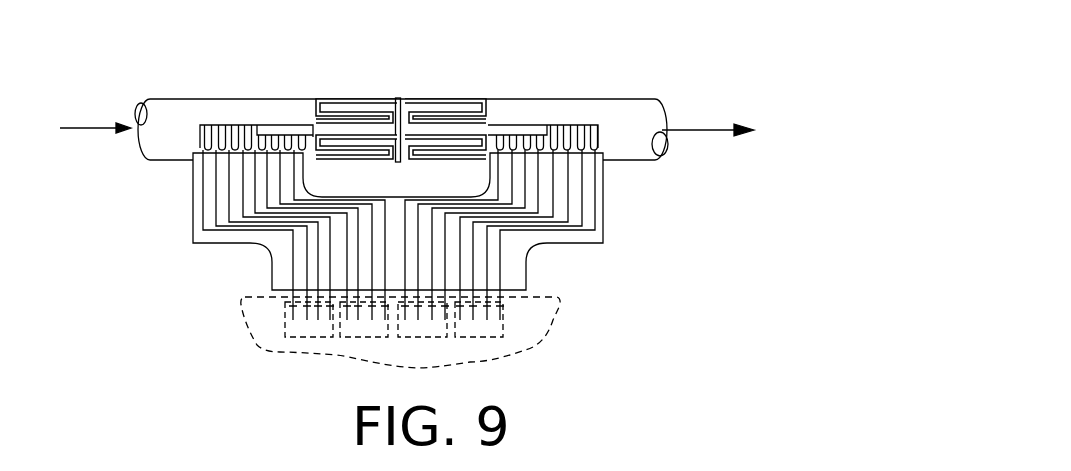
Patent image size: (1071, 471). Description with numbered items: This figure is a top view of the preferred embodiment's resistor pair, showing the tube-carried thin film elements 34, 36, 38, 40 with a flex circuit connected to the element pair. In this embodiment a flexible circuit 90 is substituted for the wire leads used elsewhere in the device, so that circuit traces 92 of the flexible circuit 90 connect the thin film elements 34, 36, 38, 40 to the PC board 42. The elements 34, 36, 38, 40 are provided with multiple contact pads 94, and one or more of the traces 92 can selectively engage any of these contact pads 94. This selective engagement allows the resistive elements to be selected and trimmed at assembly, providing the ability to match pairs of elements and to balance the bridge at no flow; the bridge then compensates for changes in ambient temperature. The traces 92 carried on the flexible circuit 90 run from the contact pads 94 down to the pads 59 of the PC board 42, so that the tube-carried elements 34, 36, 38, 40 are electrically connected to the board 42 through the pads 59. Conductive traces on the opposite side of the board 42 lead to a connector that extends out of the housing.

The thin film element 34 is at (353, 98).
The thin film element 38 is at (353, 98).
The thin film element 36 is at (470, 98).
The thin film element 40 is at (470, 98).
The flexible circuit 90 is at (270, 247).
The circuit traces 92 is at (216, 212).
The contact pads 94 is at (600, 137).
The PC board 42 is at (515, 355).
The pads 59 is at (262, 352).